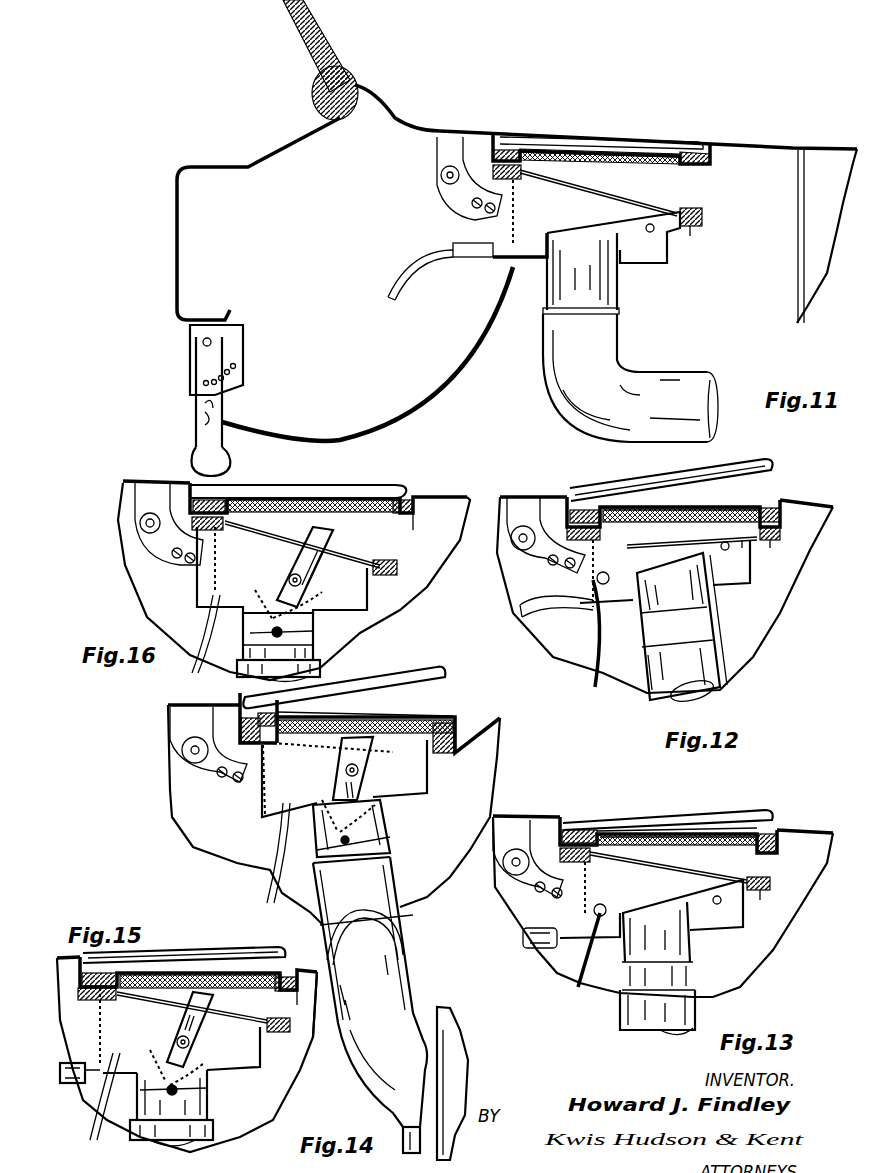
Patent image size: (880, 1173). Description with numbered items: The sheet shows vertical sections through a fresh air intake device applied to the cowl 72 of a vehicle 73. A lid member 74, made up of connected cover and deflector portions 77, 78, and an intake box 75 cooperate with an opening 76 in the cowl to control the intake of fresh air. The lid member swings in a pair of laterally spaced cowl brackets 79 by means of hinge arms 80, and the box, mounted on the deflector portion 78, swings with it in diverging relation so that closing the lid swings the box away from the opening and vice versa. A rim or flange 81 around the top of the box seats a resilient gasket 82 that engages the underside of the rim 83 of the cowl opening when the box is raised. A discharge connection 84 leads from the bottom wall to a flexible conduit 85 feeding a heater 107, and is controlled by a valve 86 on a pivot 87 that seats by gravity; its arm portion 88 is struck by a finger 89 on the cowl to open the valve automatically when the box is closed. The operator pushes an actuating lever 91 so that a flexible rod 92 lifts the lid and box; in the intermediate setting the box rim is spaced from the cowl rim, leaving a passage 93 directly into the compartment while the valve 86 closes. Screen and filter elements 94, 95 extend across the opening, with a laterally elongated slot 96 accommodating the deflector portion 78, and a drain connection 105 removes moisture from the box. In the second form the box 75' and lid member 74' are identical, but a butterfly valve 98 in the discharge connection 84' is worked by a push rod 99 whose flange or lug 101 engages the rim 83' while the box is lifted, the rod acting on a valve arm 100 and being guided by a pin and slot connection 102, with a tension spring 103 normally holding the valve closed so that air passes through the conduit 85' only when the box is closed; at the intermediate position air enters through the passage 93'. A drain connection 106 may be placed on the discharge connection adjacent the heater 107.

In FIG. 11, the cowl 72 is at (408, 126).
In FIG. 12, the cowl 72 is at (513, 498).
In FIG. 13, the cowl 72 is at (527, 818).
In FIG. 11, the vehicle 73 is at (743, 147).
In FIG. 12, the vehicle 73 is at (798, 507).
In FIG. 13, the vehicle 73 is at (805, 829).
In FIG. 11, the lid member 74 is at (601, 130).
In FIG. 12, the lid member 74 is at (671, 470).
In FIG. 13, the lid member 74 is at (668, 808).
In FIG. 16, the lid member 74' is at (328, 491).
In FIG. 14, the lid member 74' is at (370, 710).
In FIG. 15, the lid member 74' is at (198, 956).
In FIG. 11, the intake box 75 is at (686, 253).
In FIG. 12, the intake box 75 is at (685, 571).
In FIG. 13, the intake box 75 is at (654, 923).
In FIG. 15, the intake box 75 is at (193, 1054).
In FIG. 16, the box 75' is at (301, 570).
In FIG. 14, the box 75' is at (366, 778).
In FIG. 11, the opening 76 is at (667, 152).
In FIG. 12, the opening 76 is at (673, 512).
In FIG. 13, the opening 76 is at (740, 811).
In FIG. 11, the cover portion 77 is at (566, 137).
In FIG. 12, the cover portion 77 is at (706, 467).
In FIG. 13, the cover portion 77 is at (652, 811).
In FIG. 11, the deflector portion 78 is at (535, 162).
In FIG. 12, the deflector portion 78 is at (600, 528).
In FIG. 13, the deflector portion 78 is at (595, 872).
In FIG. 11, the cowl brackets 79 is at (437, 153).
In FIG. 16, the cowl brackets 79 is at (127, 505).
In FIG. 12, the cowl brackets 79 is at (510, 518).
In FIG. 13, the cowl brackets 79 is at (505, 845).
In FIG. 14, the cowl brackets 79 is at (183, 718).
In FIG. 11, the hinge arms 80 is at (465, 212).
In FIG. 16, the hinge arms 80 is at (170, 562).
In FIG. 12, the hinge arms 80 is at (537, 560).
In FIG. 13, the hinge arms 80 is at (535, 895).
In FIG. 14, the hinge arms 80 is at (213, 780).
In FIG. 15, the hinge arms 80 is at (80, 1030).
In FIG. 11, the rim or flange 81 is at (700, 230).
In FIG. 12, the rim or flange 81 is at (782, 542).
In FIG. 13, the rim or flange 81 is at (755, 903).
In FIG. 11, the resilient gasket 82 is at (700, 211).
In FIG. 12, the resilient gasket 82 is at (782, 523).
In FIG. 13, the resilient gasket 82 is at (770, 891).
In FIG. 11, the rim of the cowl opening 83 is at (618, 164).
In FIG. 13, the rim of the cowl opening 83 is at (684, 847).
In FIG. 16, the rim of the cowl opening 83' is at (410, 526).
In FIG. 14, the rim of the cowl opening 83' is at (475, 735).
In FIG. 15, the rim of the cowl opening 83' is at (286, 1002).
In FIG. 11, the discharge connection 84 is at (596, 273).
In FIG. 12, the discharge connection 84 is at (690, 626).
In FIG. 13, the discharge connection 84 is at (673, 946).
In FIG. 16, the discharge connection 84' is at (299, 636).
In FIG. 14, the discharge connection 84' is at (367, 828).
In FIG. 15, the discharge connection 84' is at (198, 1095).
In FIG. 11, the flexible conduit 85 is at (630, 378).
In FIG. 12, the flexible conduit 85 is at (695, 670).
In FIG. 13, the flexible conduit 85 is at (678, 1012).
In FIG. 16, the conduit 85' is at (298, 669).
In FIG. 14, the conduit 85' is at (372, 992).
In FIG. 15, the conduit 85' is at (192, 1135).
In FIG. 11, the valve 86 is at (580, 233).
In FIG. 12, the valve 86 is at (692, 536).
In FIG. 13, the valve 86 is at (655, 910).
In FIG. 11, the pivot 87 is at (650, 232).
In FIG. 12, the pivot 87 is at (723, 550).
In FIG. 13, the pivot 87 is at (715, 905).
In FIG. 11, the lug or arm portion 88 is at (598, 193).
In FIG. 12, the lug or arm portion 88 is at (742, 548).
In FIG. 13, the lug or arm portion 88 is at (669, 884).
In FIG. 11, the finger 89 is at (680, 164).
In FIG. 12, the finger 89 is at (735, 516).
In FIG. 13, the finger 89 is at (703, 850).
In FIG. 11, the actuating lever 91 is at (197, 432).
In FIG. 11, the flexible rod 92 is at (455, 372).
In FIG. 12, the flexible rod 92 is at (603, 652).
In FIG. 13, the flexible rod 92 is at (590, 977).
In FIG. 11, the passage 93 is at (775, 174).
In FIG. 13, the passage 93 is at (794, 857).
In FIG. 15, the passage or space 93' is at (311, 1016).
In FIG. 11, the screen element 94 is at (660, 152).
In FIG. 12, the screen element 94 is at (681, 504).
In FIG. 13, the screen element 94 is at (757, 832).
In FIG. 11, the filter element 95 is at (625, 165).
In FIG. 12, the filter element 95 is at (682, 527).
In FIG. 13, the filter element 95 is at (680, 848).
In FIG. 11, the slot 96 is at (527, 163).
In FIG. 12, the slot 96 is at (626, 504).
In FIG. 13, the slot 96 is at (598, 854).
In FIG. 16, the butterfly valve 98 is at (320, 614).
In FIG. 14, the butterfly valve 98 is at (362, 840).
In FIG. 15, the butterfly valve 98 is at (205, 1093).
In FIG. 16, the push rod 99 is at (311, 548).
In FIG. 14, the push rod 99 is at (366, 768).
In FIG. 15, the push rod 99 is at (192, 1019).
In FIG. 16, the arm or lever 100 is at (305, 599).
In FIG. 14, the arm or lever 100 is at (374, 805).
In FIG. 15, the arm or lever 100 is at (200, 1066).
In FIG. 16, the flange or lug 101 is at (325, 534).
In FIG. 14, the flange or lug 101 is at (380, 750).
In FIG. 15, the flange or lug 101 is at (224, 1001).
In FIG. 16, the pin and slot connection 102 is at (303, 573).
In FIG. 14, the pin and slot connection 102 is at (344, 775).
In FIG. 15, the pin and slot connection 102 is at (184, 1035).
In FIG. 16, the tension spring 103 is at (262, 594).
In FIG. 14, the tension spring 103 is at (313, 800).
In FIG. 15, the tension spring 103 is at (150, 1055).
In FIG. 11, the drain connection 105 is at (475, 258).
In FIG. 12, the drain connection 105 is at (550, 615).
In FIG. 14, the drain connection 106 is at (403, 1140).
In FIG. 14, the heater 107 is at (445, 1020).